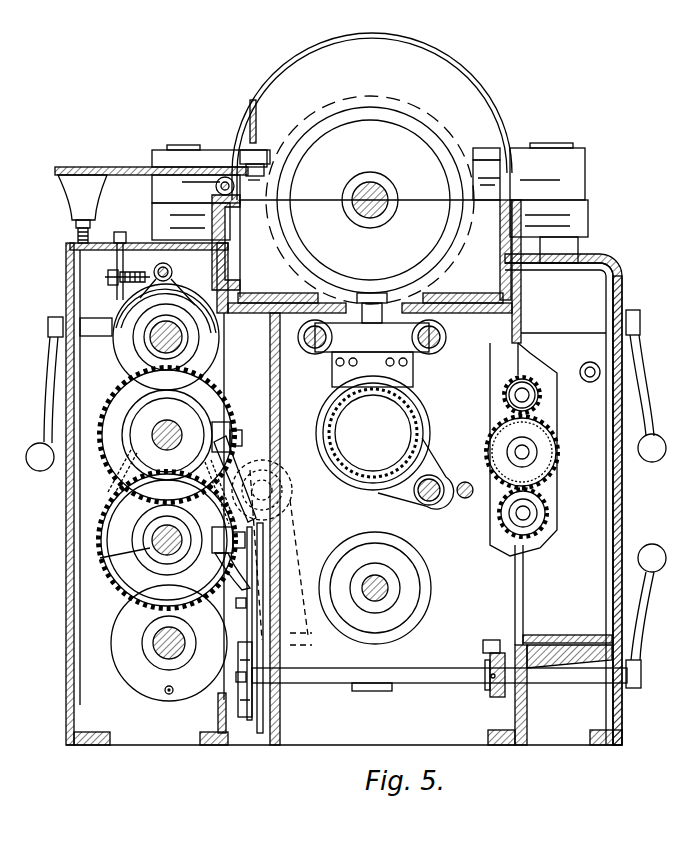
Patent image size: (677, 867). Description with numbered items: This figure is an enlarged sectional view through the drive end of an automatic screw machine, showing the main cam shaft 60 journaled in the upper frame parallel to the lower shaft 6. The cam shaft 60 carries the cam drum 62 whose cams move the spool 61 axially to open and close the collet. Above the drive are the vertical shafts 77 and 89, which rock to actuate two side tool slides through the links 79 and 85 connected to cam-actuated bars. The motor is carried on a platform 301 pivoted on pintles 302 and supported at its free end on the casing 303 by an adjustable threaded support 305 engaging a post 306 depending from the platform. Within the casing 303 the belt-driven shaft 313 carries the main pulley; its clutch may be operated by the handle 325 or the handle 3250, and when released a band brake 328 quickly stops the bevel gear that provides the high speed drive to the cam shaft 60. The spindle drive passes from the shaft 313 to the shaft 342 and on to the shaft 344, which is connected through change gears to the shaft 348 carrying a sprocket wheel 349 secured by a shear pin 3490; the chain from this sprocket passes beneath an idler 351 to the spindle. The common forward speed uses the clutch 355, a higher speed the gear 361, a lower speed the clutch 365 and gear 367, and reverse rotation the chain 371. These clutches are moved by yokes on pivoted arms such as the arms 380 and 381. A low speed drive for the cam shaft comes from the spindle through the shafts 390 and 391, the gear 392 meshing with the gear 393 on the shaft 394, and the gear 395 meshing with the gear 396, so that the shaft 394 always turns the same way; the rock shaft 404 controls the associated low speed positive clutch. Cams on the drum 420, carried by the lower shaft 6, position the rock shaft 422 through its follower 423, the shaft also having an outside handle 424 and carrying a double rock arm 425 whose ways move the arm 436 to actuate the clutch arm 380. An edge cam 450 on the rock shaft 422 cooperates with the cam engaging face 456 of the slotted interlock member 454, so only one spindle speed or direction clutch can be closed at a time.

The lower shaft 6 is at (117, 232).
The main cam shaft 60 is at (371, 188).
The spool 61 is at (416, 418).
The cam drum 62 is at (363, 118).
The vertical shaft 77 is at (200, 150).
The link 79 is at (262, 165).
The link 85 is at (484, 160).
The vertical shaft 89 is at (558, 148).
The platform 301 is at (133, 167).
The pintles 302 is at (235, 207).
The casing 303 is at (70, 266).
The adjustable threaded support 305 is at (76, 231).
The post 306 is at (70, 192).
The shaft 313 is at (160, 340).
The actuating handle 325 is at (52, 385).
The band brake 328 is at (205, 282).
The shaft 342 is at (185, 428).
The shaft 344 is at (152, 552).
The shaft 348 is at (160, 650).
The sprocket wheel 349 is at (116, 648).
The idler 351 is at (295, 514).
The clutch 355 is at (135, 540).
The gear 361 is at (104, 424).
The clutch 365 is at (158, 462).
The gear 367 is at (100, 560).
The chain 371 is at (114, 484).
The pivoted arm 380 is at (237, 463).
The pivoted arm 381 is at (212, 560).
The shaft 390 is at (531, 452).
The shaft 391 is at (532, 514).
The gear 392 is at (490, 449).
The gear 393 is at (506, 394).
The shaft 394 is at (521, 388).
The gear 395 is at (500, 518).
The gear 396 is at (548, 462).
The rock shaft 404 is at (591, 362).
The cam drum 420 is at (424, 580).
The rock shaft 422 is at (440, 675).
The cam follower 423 is at (355, 680).
The handle 424 is at (636, 628).
The double rock arm 425 is at (240, 700).
The arm 436 is at (262, 656).
The edge cam 450 is at (494, 700).
The member 454 is at (507, 690).
The cam engaging face 456 is at (472, 653).
The actuating handle 3250 is at (632, 276).
The shear pin 3490 is at (168, 696).